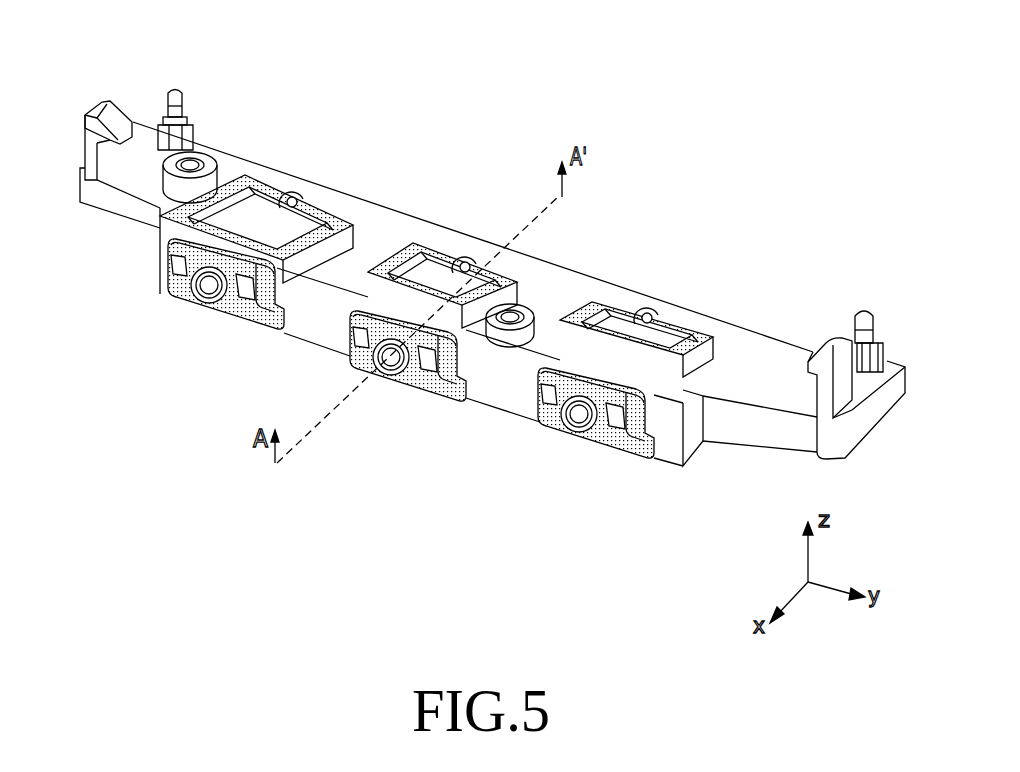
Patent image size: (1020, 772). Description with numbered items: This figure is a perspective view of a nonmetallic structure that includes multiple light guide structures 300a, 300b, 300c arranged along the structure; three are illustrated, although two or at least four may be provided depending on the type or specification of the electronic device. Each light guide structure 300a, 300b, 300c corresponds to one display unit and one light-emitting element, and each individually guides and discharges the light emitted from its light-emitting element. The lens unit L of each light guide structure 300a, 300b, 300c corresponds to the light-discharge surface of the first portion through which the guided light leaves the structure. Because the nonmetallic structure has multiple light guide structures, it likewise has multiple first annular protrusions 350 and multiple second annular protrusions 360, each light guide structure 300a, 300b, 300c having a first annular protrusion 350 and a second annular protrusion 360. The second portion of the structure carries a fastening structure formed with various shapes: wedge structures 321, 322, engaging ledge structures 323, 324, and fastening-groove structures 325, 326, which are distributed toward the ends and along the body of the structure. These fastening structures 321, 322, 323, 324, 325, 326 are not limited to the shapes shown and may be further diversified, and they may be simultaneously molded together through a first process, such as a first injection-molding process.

The light guide structure 300a is at (150, 257).
The light guide structure 300b is at (332, 330).
The light guide structure 300c is at (522, 392).
The wedge structure 321 is at (866, 312).
The wedge structure 322 is at (176, 91).
The engaging ledge structure 323 is at (838, 342).
The engaging ledge structure 324 is at (104, 98).
The fastening-groove structure 325 is at (540, 323).
The fastening-groove structure 326 is at (203, 156).
The first annular protrusion 350 is at (200, 298).
The second annular protrusion 360 is at (325, 207).
The lens unit L is at (202, 302).